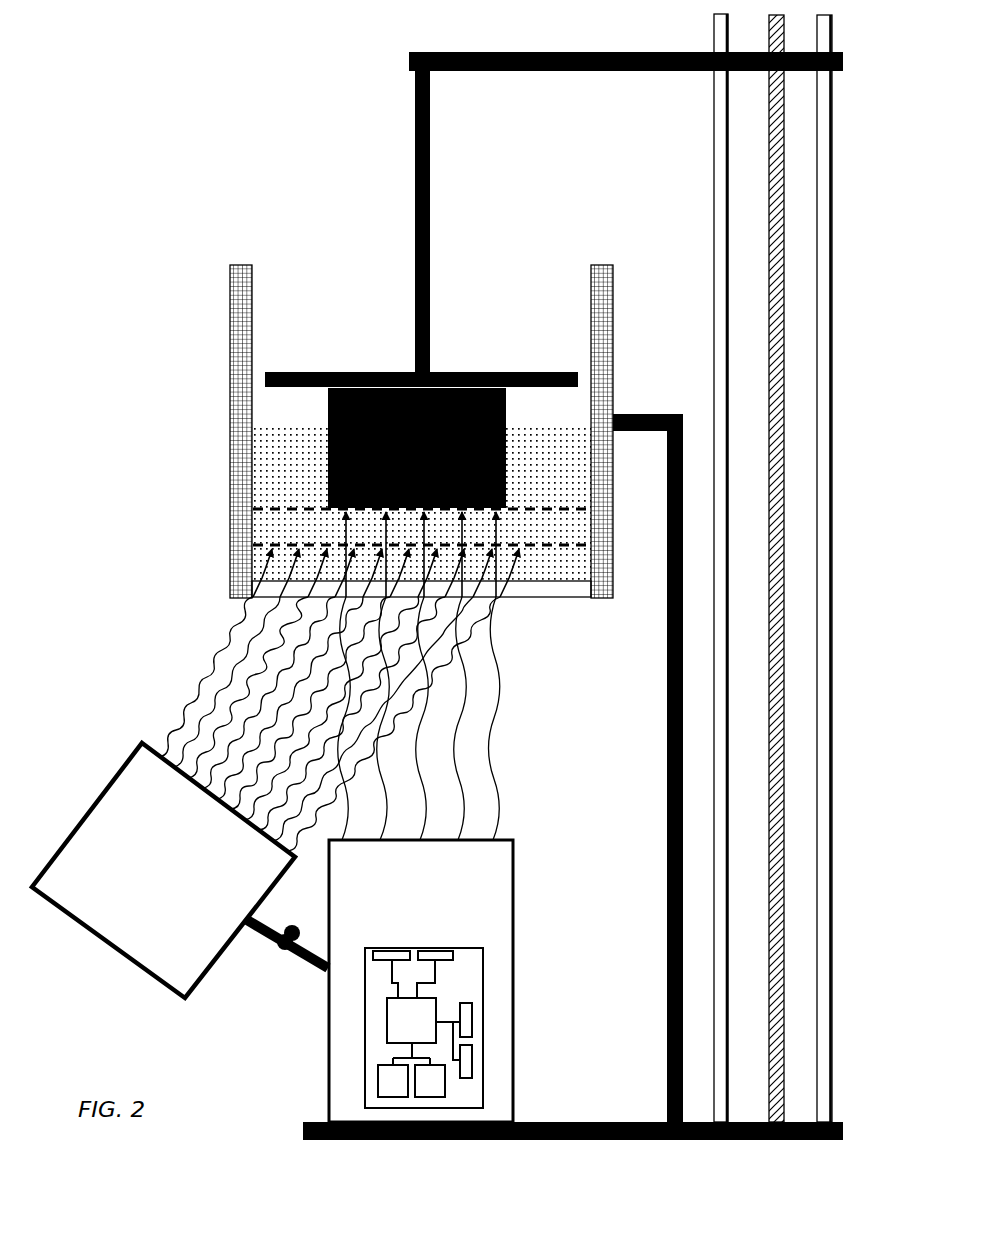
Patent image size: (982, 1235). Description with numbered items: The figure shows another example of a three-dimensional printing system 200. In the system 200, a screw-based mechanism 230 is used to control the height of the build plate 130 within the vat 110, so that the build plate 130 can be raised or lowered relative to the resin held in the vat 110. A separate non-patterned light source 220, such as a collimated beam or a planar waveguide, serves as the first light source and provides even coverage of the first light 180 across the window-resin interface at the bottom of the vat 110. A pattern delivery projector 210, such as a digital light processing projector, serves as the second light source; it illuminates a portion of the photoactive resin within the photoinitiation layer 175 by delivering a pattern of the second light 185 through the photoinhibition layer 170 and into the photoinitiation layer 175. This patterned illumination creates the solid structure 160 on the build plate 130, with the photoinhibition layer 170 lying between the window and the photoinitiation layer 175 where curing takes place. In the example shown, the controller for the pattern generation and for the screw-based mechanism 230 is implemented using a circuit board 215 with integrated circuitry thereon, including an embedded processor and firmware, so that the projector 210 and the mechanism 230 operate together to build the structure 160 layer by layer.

The 3D printing system 200 is at (148, 83).
The vat 110 is at (230, 296).
The build plate 130 is at (490, 372).
The solid structure 160 is at (330, 413).
The photoinhibition layer 170 is at (265, 563).
The photoinitiation layer 175 is at (265, 530).
The first light 180 is at (215, 668).
The second light 185 is at (496, 737).
The pattern delivery projector 210 is at (513, 982).
The circuit board 215 is at (365, 1029).
The non-patterned light source 220 is at (135, 748).
The screw-based mechanism 230 is at (688, 171).